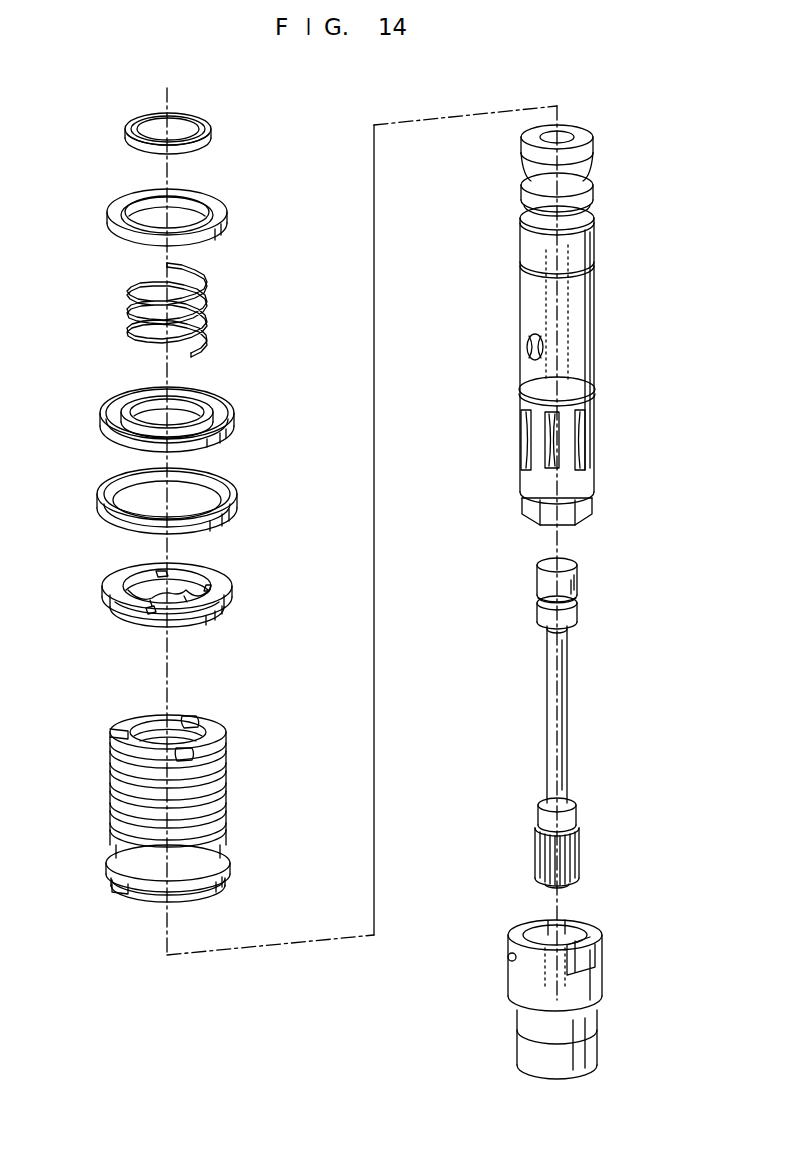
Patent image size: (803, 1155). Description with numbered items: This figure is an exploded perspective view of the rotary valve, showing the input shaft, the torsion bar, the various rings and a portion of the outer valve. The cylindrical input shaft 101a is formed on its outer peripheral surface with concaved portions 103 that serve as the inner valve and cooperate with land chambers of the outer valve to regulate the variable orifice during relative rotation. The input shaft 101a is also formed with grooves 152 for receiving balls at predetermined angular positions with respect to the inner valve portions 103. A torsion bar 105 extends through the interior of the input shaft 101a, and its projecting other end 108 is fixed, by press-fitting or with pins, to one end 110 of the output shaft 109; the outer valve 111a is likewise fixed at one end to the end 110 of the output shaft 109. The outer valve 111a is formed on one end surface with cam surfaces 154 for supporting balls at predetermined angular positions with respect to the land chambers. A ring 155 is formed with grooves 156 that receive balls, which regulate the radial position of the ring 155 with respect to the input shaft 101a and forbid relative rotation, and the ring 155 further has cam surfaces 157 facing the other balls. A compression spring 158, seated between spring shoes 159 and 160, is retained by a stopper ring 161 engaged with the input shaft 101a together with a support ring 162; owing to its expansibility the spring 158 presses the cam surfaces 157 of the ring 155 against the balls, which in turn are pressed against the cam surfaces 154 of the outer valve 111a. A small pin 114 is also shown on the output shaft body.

The stopper ring 161 is at (205, 123).
The spring shoe 159 is at (218, 208).
The spring 158 is at (208, 312).
The spring shoe 160 is at (215, 408).
The support ring 162 is at (228, 490).
The ring 155 is at (189, 601).
The grooves 156 is at (165, 576).
The cam surfaces 157 is at (186, 596).
The cam surfaces 154 is at (196, 716).
The outer valve 111a is at (167, 814).
The input shaft 101a is at (553, 325).
The grooves 152 is at (528, 350).
The concaved portions 103 is at (520, 453).
The torsion bar 105 is at (584, 723).
The other end of torsion bar 108 is at (572, 855).
The pin 114 is at (508, 955).
The one end of output shaft 110 is at (552, 960).
The output shaft 109 is at (600, 1060).